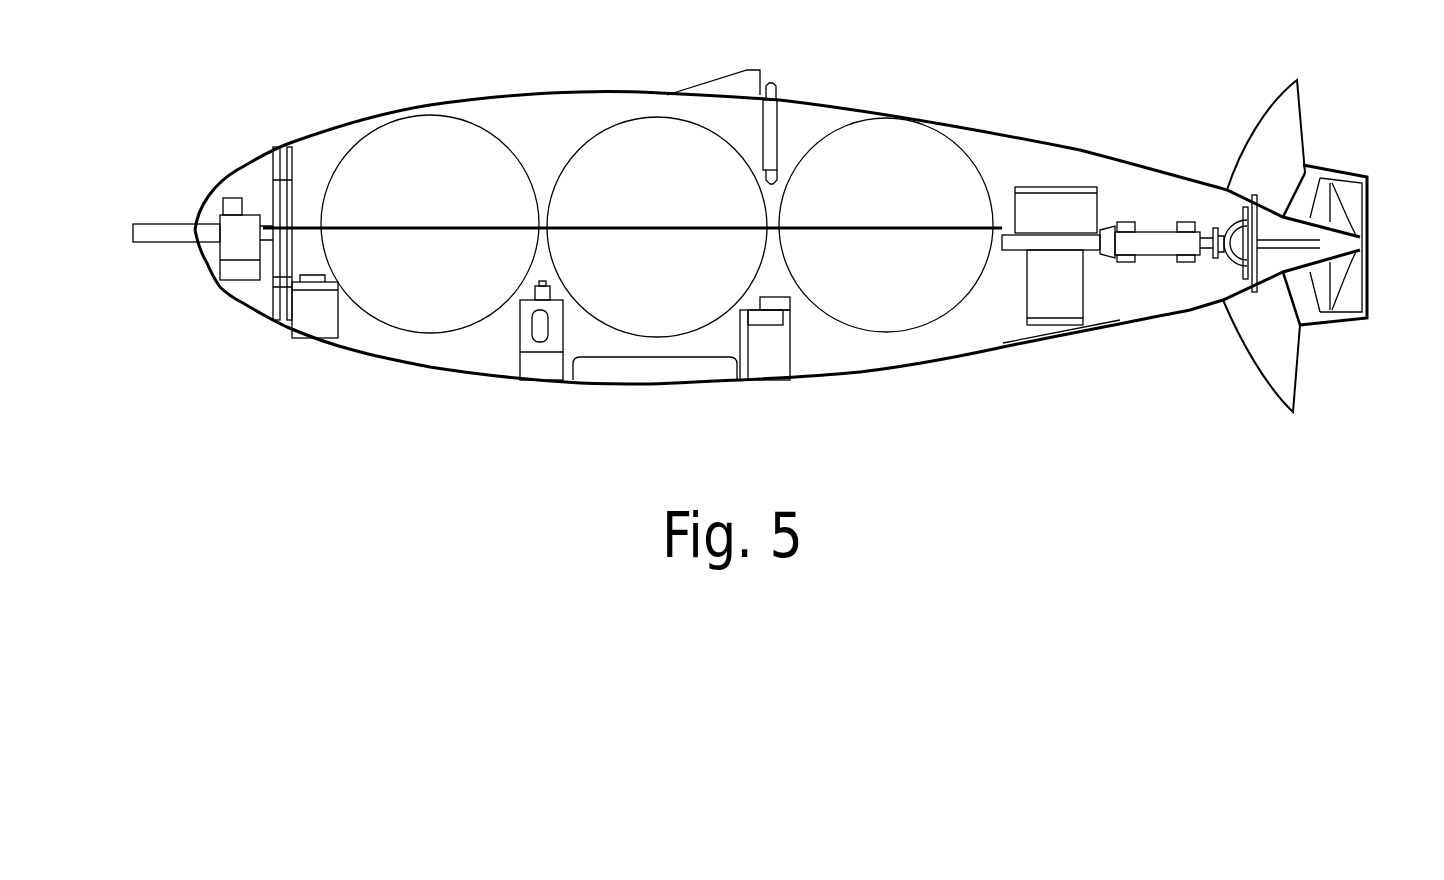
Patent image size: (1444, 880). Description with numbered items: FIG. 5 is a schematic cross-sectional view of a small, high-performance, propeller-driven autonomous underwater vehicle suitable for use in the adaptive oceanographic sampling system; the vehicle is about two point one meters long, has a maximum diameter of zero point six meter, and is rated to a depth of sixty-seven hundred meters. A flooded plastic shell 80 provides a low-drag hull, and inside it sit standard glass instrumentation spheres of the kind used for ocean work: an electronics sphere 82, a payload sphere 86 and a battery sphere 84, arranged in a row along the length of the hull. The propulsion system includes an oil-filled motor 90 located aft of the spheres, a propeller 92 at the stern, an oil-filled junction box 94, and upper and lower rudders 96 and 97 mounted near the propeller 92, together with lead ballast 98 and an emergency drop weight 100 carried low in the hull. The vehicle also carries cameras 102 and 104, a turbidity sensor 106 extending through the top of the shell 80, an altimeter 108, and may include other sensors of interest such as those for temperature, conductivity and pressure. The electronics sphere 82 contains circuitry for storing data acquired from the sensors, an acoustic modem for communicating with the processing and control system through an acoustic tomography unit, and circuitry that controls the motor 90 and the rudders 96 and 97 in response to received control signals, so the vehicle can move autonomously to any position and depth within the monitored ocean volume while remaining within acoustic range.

The flooded plastic shell 80 is at (545, 94).
The electronics sphere 82 is at (405, 135).
The battery sphere 84 is at (890, 137).
The payload sphere 86 is at (615, 135).
The oil-filled motor 90 is at (1160, 230).
The propeller 92 is at (1367, 213).
The oil-filled junction box 94 is at (1046, 176).
The rudder 96 is at (1257, 105).
The rudder 97 is at (1258, 390).
The lead ballast 98 is at (652, 372).
The emergency drop weight 100 is at (777, 385).
The camera 102 is at (236, 298).
The camera 104 is at (1055, 302).
The turbidity sensor 106 is at (780, 125).
The altimeter 108 is at (513, 332).